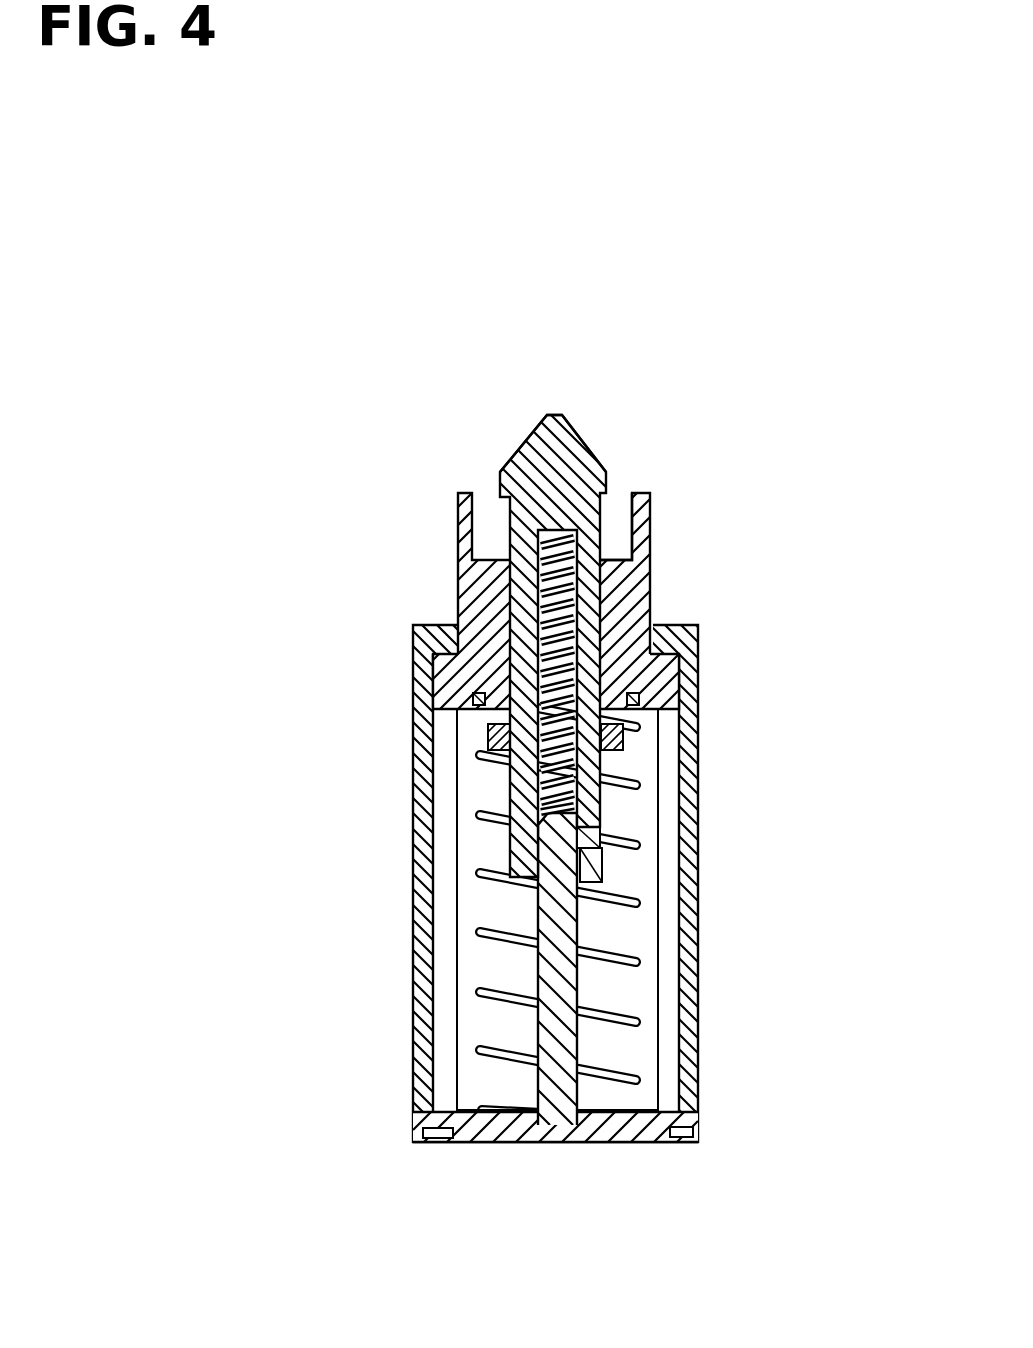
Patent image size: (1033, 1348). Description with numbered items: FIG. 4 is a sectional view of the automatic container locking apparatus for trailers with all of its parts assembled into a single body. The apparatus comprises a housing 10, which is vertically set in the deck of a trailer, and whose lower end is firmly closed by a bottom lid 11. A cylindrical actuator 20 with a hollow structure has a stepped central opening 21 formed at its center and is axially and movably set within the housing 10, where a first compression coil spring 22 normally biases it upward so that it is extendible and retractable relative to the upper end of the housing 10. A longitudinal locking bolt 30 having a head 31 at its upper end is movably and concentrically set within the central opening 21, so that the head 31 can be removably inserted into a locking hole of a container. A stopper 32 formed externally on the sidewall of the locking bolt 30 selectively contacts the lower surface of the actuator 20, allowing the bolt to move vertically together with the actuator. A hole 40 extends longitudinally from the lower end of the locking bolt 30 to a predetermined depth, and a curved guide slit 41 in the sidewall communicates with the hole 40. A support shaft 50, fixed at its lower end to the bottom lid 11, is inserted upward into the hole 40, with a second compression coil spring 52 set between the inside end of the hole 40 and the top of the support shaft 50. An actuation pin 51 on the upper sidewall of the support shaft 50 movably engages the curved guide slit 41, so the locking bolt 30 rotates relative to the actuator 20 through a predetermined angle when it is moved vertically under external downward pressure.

The housing 10 is at (413, 837).
The bottom lid 11 is at (637, 1138).
The cylindrical actuator 20 is at (652, 524).
The stepped central opening 21 is at (613, 527).
The first compression coil spring 22 is at (645, 965).
The locking bolt 30 is at (522, 613).
The head 31 is at (528, 452).
The stopper 32 is at (555, 752).
The hole 40 is at (578, 584).
The guide slit 41 is at (580, 640).
The support shaft 50 is at (538, 980).
The actuation pin 51 is at (594, 834).
The second compression coil spring 52 is at (605, 723).